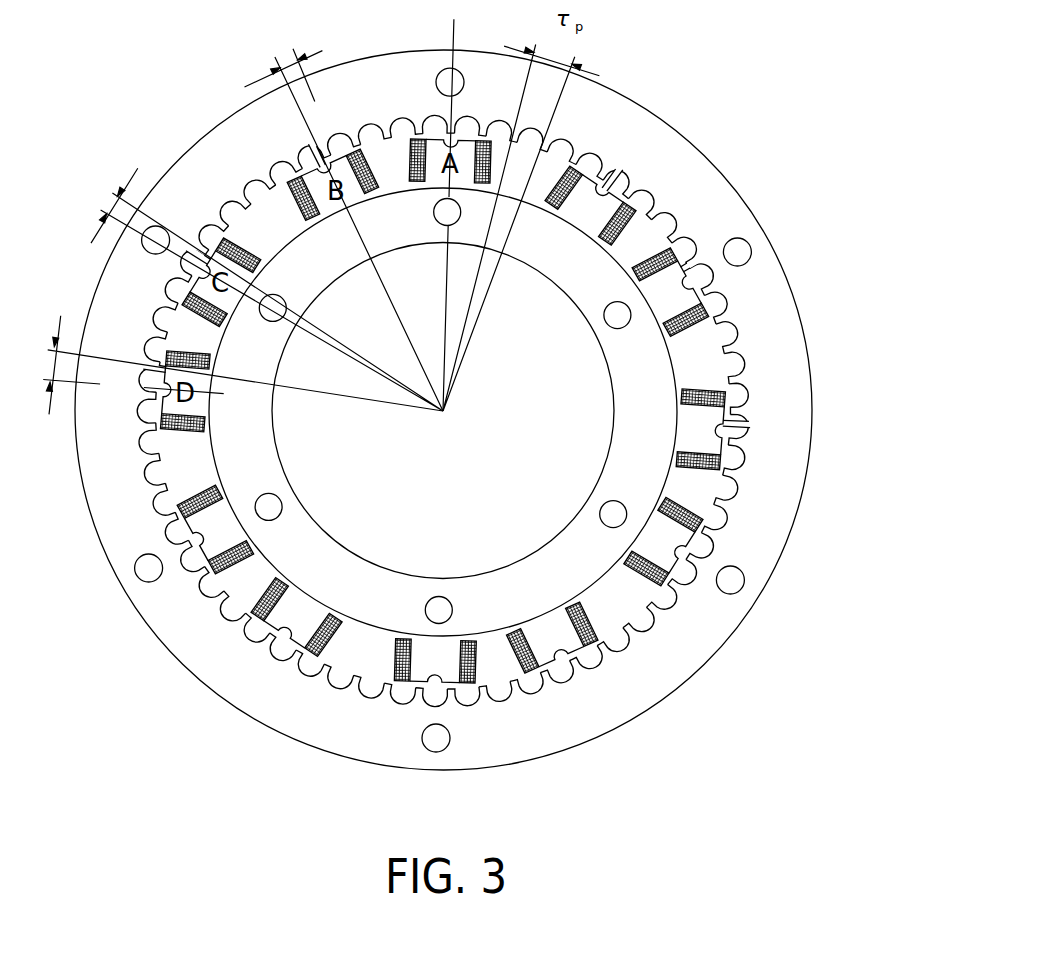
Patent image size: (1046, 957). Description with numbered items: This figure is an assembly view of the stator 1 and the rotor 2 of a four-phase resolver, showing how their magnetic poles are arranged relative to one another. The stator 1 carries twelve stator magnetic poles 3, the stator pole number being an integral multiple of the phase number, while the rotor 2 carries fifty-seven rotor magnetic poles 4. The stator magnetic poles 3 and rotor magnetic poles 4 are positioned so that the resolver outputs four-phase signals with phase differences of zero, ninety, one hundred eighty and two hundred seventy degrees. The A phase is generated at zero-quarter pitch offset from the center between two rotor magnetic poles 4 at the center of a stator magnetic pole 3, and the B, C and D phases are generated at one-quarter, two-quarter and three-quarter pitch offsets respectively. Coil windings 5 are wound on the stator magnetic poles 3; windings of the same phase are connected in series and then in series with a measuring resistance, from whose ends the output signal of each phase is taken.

The stator 1 is at (563, 577).
The rotor 2 is at (786, 303).
The stator magnetic poles 3 is at (700, 430).
The rotor magnetic poles 4 is at (655, 212).
The coil windings 5 is at (567, 577).